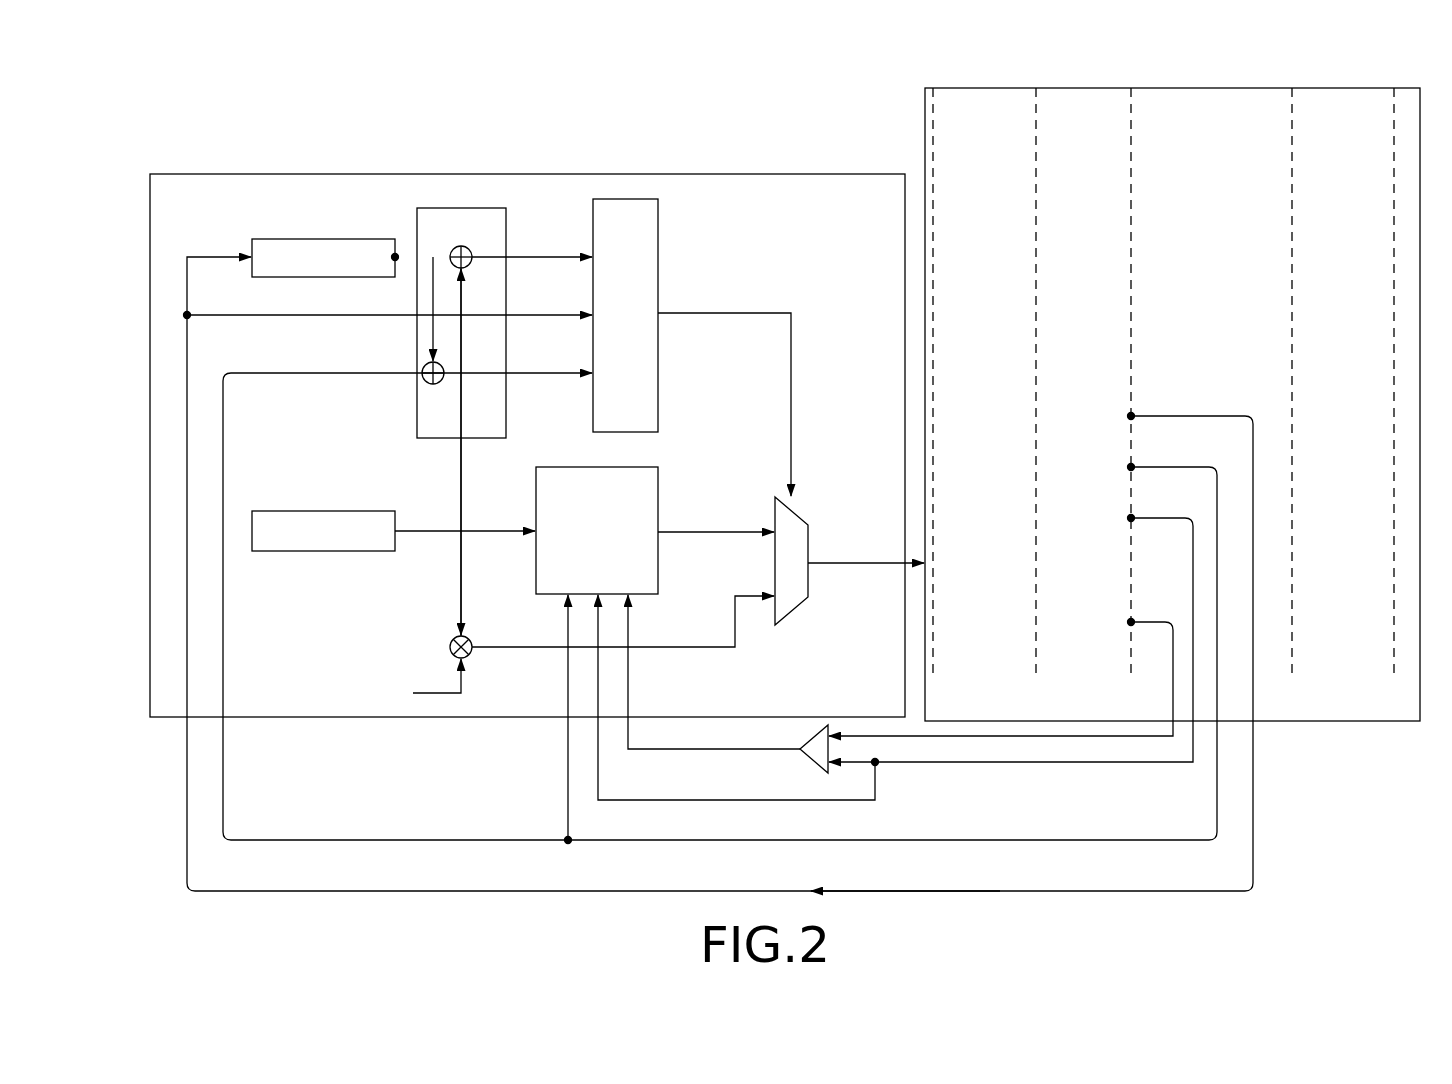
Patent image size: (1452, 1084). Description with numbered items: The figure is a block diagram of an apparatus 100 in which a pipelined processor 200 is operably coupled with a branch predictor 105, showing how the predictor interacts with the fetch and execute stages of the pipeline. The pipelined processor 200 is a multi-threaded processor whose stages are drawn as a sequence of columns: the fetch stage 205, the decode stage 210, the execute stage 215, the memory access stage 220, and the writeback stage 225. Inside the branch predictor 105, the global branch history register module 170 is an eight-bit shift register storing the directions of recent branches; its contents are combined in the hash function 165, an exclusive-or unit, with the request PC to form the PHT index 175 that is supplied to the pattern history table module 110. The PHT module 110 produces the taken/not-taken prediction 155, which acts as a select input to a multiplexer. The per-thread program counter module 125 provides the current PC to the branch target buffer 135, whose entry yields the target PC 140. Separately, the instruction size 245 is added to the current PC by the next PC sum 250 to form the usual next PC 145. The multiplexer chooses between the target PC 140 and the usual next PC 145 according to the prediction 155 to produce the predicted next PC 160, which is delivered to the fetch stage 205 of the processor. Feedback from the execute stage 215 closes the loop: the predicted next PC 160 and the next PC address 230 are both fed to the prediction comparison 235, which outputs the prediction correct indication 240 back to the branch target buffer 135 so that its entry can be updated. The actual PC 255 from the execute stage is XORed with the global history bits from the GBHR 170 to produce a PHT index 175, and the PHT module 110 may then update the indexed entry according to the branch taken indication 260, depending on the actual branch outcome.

The apparatus 100 is at (291, 138).
The branch predictor 105 is at (216, 225).
The pattern history table module 110 is at (658, 250).
The per-thread program counter module 125 is at (303, 508).
The branch target buffer 135 is at (537, 500).
The target PC 140 is at (732, 530).
The usual next PC 145 is at (715, 645).
The taken/not-taken prediction 155 is at (733, 312).
The predicted next PC 160 is at (830, 563).
The hash function 165 is at (435, 228).
The global branch history register module 170 is at (275, 237).
The PHT index 175 is at (557, 257).
The pipelined processor 200 is at (925, 150).
The fetch stage 205 is at (933, 125).
The decode stage 210 is at (1036, 128).
The execute stage 215 is at (1131, 128).
The memory access stage 220 is at (1292, 128).
The writeback stage 225 is at (1394, 128).
The next PC address 230 is at (892, 763).
The prediction comparison 235 is at (813, 763).
The prediction correct indication 240 is at (685, 749).
The instruction size 245 is at (413, 693).
The next PC sum 250 is at (450, 643).
The actual PC 255 is at (358, 840).
The branch taken indication 260 is at (1100, 891).